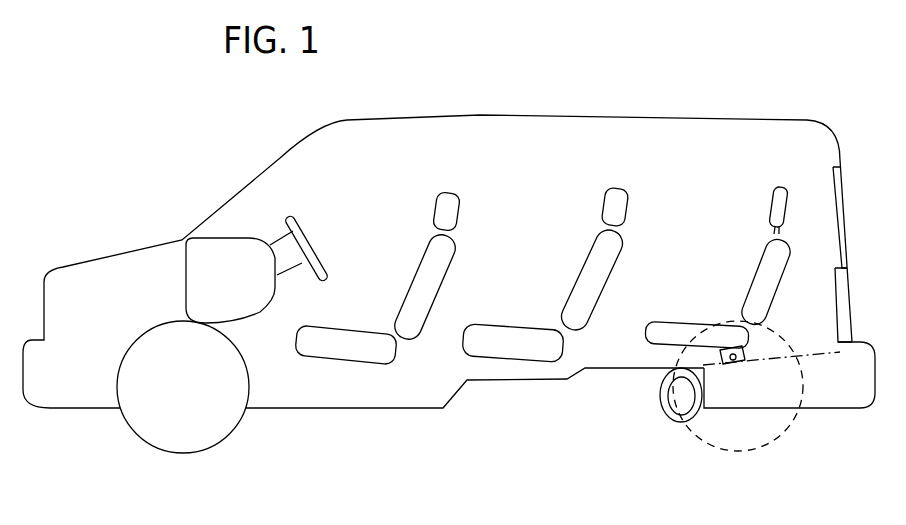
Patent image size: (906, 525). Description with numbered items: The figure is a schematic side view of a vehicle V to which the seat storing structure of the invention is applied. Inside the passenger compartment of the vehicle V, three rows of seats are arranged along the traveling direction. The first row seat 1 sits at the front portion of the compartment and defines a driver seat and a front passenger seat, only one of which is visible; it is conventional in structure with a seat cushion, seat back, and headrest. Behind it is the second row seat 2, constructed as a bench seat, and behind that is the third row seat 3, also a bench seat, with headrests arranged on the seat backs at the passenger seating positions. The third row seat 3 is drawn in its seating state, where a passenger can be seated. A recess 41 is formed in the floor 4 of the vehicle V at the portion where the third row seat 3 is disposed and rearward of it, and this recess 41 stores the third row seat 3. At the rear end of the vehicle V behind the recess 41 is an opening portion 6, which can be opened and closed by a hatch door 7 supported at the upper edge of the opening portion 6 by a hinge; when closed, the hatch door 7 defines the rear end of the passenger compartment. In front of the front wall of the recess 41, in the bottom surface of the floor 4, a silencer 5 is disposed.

The vehicle V is at (541, 83).
The first row seat 1 is at (345, 385).
The second row seat 2 is at (511, 375).
The third row seat 3 is at (646, 362).
The floor 4 is at (573, 388).
The silencer 5 is at (666, 424).
The recess 41 is at (766, 398).
The opening portion 6 is at (830, 258).
The hatch door 7 is at (838, 342).